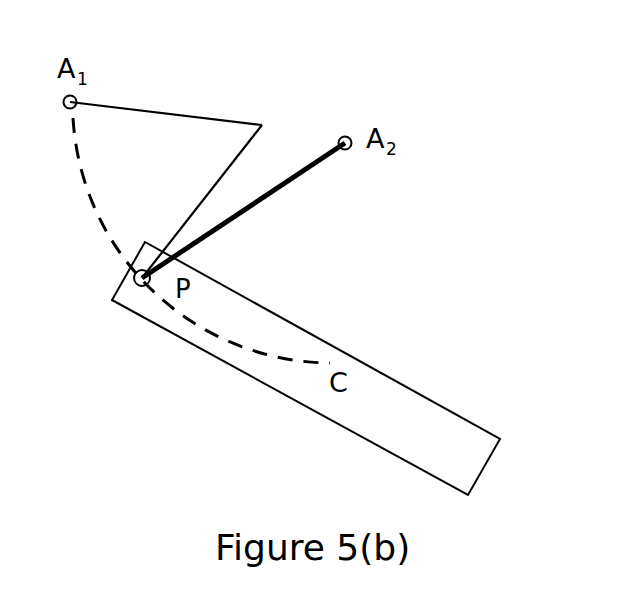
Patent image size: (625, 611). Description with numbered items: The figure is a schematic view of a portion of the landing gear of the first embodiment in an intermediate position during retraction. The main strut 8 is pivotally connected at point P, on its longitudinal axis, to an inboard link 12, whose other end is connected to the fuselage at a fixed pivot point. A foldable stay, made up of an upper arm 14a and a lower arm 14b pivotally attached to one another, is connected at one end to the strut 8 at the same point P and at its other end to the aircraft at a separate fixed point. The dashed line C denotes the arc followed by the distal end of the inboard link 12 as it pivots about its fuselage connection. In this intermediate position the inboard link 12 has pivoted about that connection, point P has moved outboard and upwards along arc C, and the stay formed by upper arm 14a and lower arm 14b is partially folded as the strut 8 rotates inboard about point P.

The upper arm 14a is at (172, 110).
The lower arm 14b is at (240, 160).
The inboard link 12 is at (282, 187).
The main strut 8 is at (417, 428).